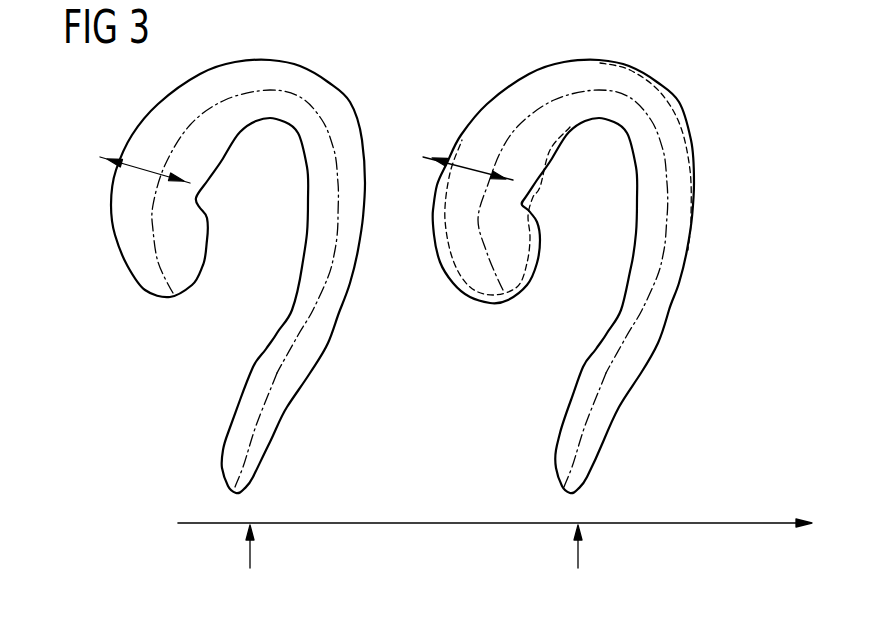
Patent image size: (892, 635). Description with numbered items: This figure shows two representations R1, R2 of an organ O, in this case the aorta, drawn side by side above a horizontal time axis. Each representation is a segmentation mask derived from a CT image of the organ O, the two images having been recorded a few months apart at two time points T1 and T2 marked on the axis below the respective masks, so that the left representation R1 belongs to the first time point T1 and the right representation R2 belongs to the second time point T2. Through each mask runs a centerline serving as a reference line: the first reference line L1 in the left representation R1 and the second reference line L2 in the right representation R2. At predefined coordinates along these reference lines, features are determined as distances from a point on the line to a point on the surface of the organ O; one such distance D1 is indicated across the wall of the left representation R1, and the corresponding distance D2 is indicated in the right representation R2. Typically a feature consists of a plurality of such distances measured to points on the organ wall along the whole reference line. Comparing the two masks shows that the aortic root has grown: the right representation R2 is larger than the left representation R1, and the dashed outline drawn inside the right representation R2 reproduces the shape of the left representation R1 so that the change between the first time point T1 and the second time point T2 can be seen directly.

The organ O is at (157, 112).
The distance D1 is at (143, 170).
The distance D2 is at (473, 172).
The first reference line L1 is at (308, 320).
The second reference line L2 is at (620, 363).
The first representation R1 is at (232, 420).
The second representation R2 is at (562, 420).
The first time point T1 is at (250, 564).
The second time point T2 is at (581, 564).